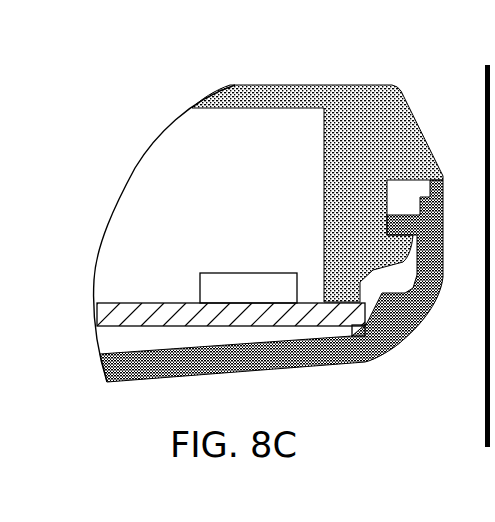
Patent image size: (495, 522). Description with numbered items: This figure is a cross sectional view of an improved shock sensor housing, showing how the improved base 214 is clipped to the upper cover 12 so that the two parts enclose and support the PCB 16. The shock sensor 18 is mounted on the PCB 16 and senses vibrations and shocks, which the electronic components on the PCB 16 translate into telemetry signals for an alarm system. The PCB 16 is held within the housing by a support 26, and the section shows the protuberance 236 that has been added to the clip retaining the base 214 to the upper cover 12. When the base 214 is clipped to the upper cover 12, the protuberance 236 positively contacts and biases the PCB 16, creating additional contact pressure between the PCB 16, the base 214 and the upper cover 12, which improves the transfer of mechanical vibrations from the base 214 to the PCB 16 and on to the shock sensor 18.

The upper cover 12 is at (275, 233).
The PCB 16 is at (192, 297).
The shock sensor 18 is at (231, 244).
The support 26 is at (377, 369).
The improved base 214 is at (317, 167).
The protuberance 236 is at (303, 246).